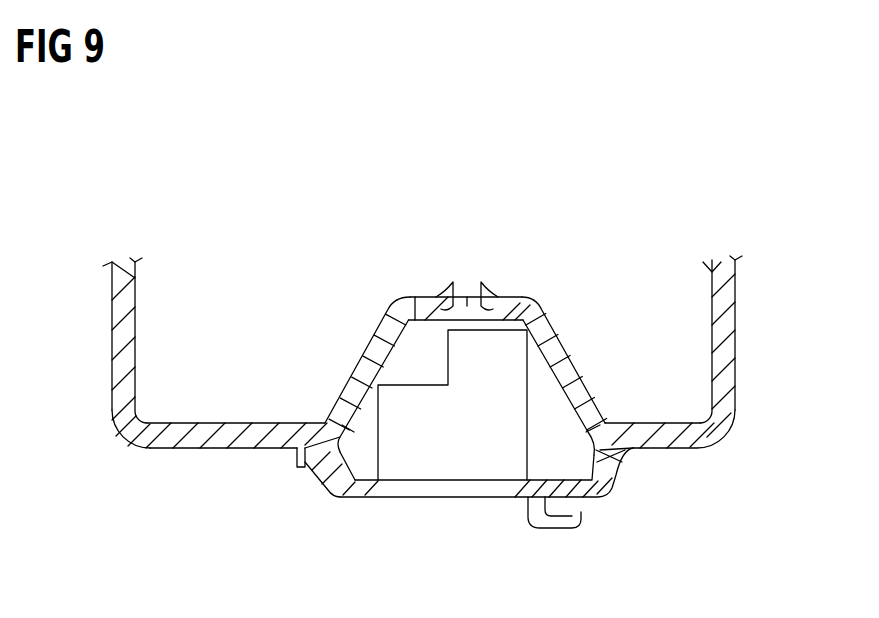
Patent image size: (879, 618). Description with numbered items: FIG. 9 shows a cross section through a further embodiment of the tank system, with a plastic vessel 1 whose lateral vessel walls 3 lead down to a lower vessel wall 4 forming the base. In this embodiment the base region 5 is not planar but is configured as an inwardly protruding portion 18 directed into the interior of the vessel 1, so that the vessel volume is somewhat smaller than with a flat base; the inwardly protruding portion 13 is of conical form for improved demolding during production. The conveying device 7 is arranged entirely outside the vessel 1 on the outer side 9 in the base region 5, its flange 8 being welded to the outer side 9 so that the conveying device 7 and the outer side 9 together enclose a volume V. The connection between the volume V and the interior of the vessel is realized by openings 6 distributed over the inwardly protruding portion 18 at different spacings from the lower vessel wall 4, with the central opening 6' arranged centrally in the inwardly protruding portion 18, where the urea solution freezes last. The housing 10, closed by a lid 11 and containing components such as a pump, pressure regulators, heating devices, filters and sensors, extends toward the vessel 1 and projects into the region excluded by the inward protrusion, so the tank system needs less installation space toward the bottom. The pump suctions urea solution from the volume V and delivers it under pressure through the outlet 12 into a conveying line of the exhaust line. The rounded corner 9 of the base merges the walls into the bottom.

The vessel 1 is at (765, 218).
The lateral vessel walls 3 is at (113, 300).
The lower vessel wall 4 is at (225, 424).
The base region 5 is at (568, 315).
The openings 6 is at (467, 387).
The central opening 6' is at (470, 261).
The conveying device 7 is at (324, 501).
The flange 8 is at (298, 470).
The outer side 9 is at (155, 462).
The housing 10 is at (480, 450).
The lid 11 is at (423, 487).
The outlet 12 is at (585, 525).
The inwardly protruding portion 13 is at (440, 300).
The inwardly protruding portion 18 is at (386, 331).
The volume V is at (360, 446).